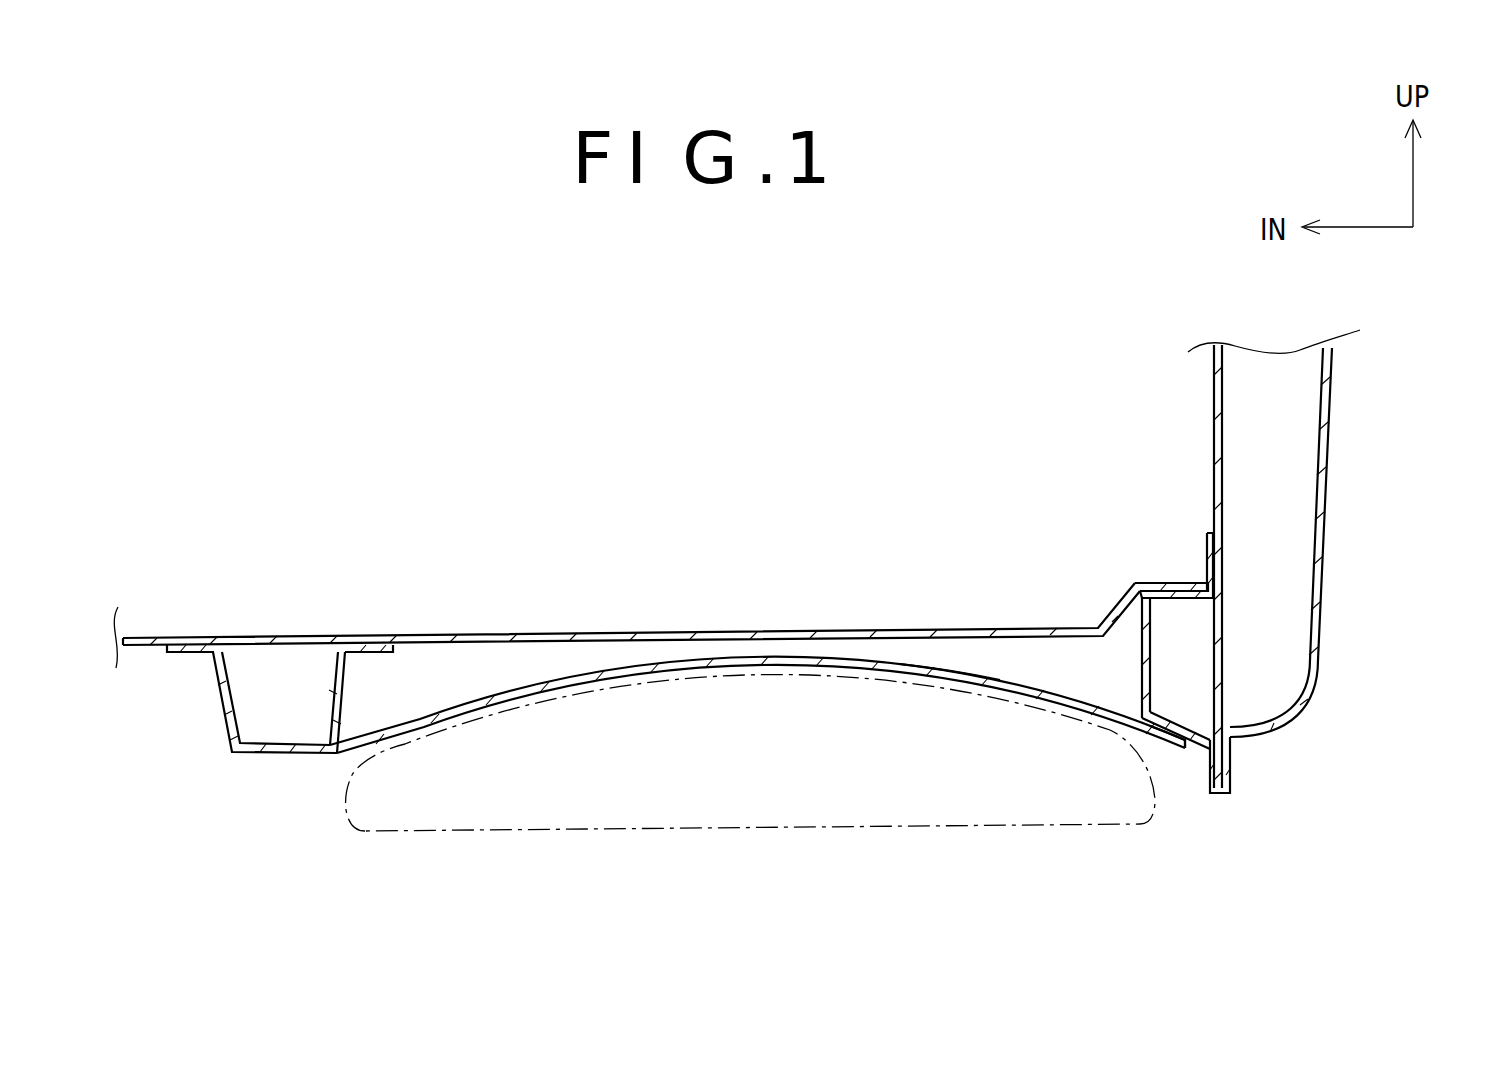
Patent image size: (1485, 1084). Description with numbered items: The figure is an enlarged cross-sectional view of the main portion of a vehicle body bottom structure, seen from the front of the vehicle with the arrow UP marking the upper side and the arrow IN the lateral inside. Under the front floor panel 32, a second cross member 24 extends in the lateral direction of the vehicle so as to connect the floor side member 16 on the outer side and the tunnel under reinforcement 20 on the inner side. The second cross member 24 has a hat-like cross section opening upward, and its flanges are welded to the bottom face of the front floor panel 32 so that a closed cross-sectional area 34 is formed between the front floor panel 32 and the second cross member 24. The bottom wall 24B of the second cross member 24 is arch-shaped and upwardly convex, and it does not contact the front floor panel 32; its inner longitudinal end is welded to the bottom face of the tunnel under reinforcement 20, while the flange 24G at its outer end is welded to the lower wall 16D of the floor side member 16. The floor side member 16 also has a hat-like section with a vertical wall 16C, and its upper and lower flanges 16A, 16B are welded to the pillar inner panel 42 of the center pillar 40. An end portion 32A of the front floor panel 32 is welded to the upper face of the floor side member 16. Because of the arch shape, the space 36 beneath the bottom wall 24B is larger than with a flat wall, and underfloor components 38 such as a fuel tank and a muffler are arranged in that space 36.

The floor side member 16 is at (1138, 673).
The upper flange 16A is at (1210, 548).
The lower flange 16B is at (1210, 777).
The vertical wall 16C is at (1138, 642).
The lower wall 16D is at (1150, 725).
The tunnel under reinforcement 20 is at (230, 716).
The second cross member 24 is at (1010, 695).
The bottom wall 24B is at (948, 685).
The flange 24G is at (1168, 737).
The front floor panel 32 is at (606, 626).
The end portion 32A is at (1173, 584).
The closed cross-sectional area 34 is at (470, 667).
The space 36 is at (783, 748).
The underfloor components 38 is at (773, 829).
The center pillar 40 is at (1338, 420).
The pillar inner panel 42 is at (1214, 436).